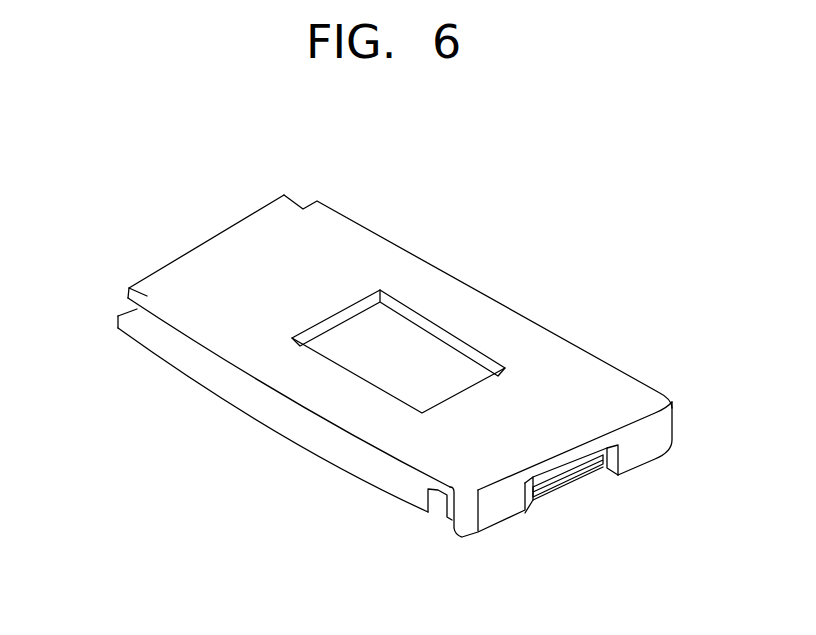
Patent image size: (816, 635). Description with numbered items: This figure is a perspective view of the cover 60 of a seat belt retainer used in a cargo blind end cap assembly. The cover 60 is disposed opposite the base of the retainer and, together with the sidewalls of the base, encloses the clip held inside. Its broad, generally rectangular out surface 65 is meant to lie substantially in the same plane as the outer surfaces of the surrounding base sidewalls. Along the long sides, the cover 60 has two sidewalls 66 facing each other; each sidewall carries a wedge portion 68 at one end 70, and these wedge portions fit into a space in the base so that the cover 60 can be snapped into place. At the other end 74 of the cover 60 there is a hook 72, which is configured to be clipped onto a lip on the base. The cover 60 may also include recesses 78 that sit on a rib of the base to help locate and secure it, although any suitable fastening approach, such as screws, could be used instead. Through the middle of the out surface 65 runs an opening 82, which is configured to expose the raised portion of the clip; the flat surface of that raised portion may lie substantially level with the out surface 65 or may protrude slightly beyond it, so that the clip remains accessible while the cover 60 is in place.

The cover 60 is at (590, 318).
The out surface 65 is at (508, 327).
The sidewalls 66 is at (293, 422).
The wedge portion 68 is at (133, 305).
The end 70 is at (197, 248).
The hook 72 is at (553, 490).
The another end 74 is at (575, 457).
The recesses 78 is at (438, 515).
The opening 82 is at (413, 353).